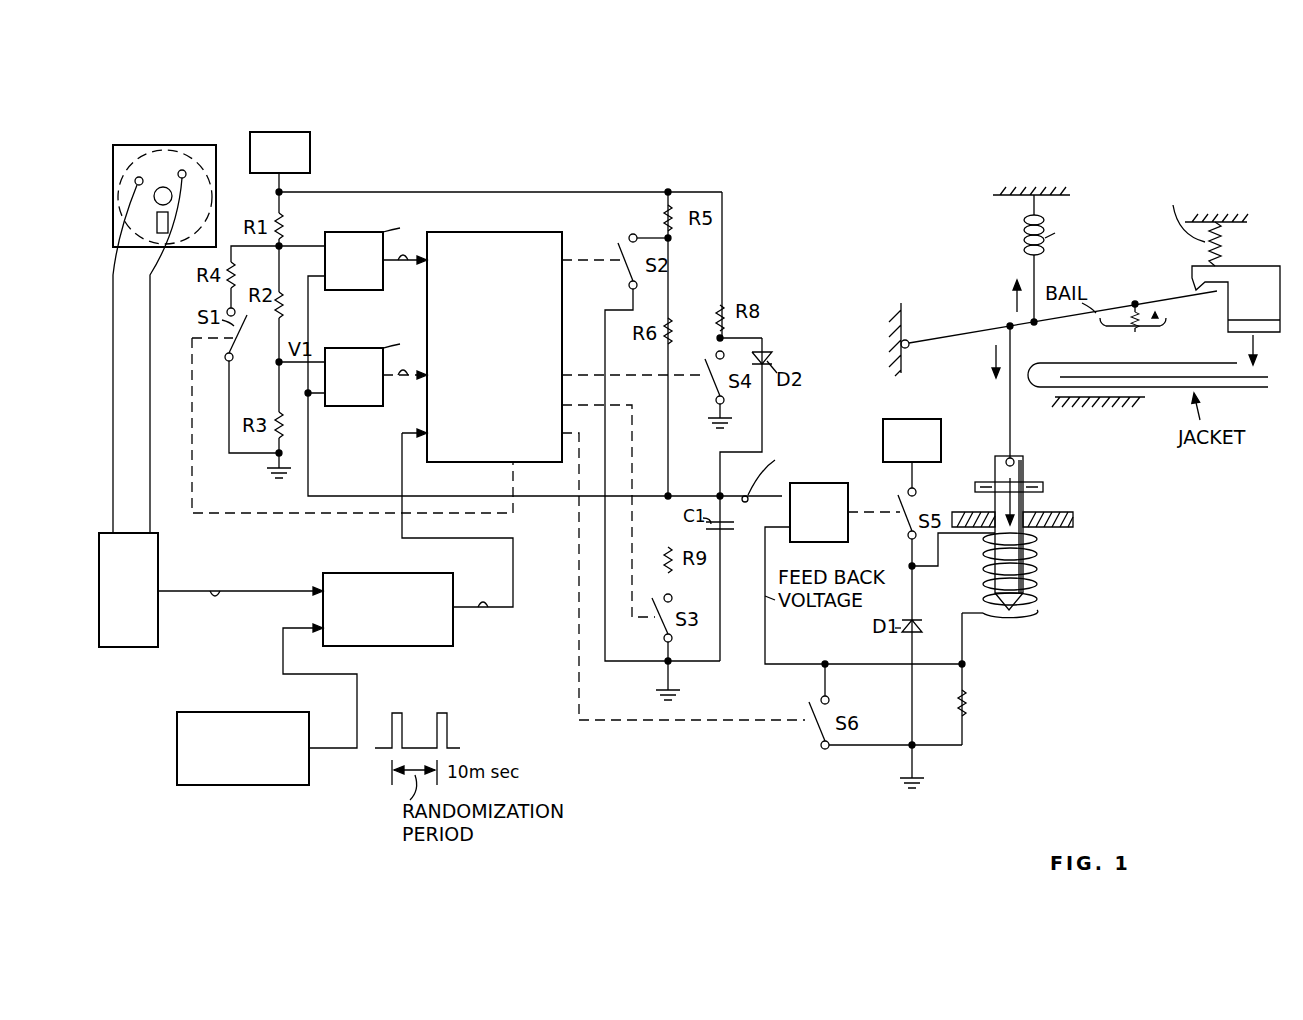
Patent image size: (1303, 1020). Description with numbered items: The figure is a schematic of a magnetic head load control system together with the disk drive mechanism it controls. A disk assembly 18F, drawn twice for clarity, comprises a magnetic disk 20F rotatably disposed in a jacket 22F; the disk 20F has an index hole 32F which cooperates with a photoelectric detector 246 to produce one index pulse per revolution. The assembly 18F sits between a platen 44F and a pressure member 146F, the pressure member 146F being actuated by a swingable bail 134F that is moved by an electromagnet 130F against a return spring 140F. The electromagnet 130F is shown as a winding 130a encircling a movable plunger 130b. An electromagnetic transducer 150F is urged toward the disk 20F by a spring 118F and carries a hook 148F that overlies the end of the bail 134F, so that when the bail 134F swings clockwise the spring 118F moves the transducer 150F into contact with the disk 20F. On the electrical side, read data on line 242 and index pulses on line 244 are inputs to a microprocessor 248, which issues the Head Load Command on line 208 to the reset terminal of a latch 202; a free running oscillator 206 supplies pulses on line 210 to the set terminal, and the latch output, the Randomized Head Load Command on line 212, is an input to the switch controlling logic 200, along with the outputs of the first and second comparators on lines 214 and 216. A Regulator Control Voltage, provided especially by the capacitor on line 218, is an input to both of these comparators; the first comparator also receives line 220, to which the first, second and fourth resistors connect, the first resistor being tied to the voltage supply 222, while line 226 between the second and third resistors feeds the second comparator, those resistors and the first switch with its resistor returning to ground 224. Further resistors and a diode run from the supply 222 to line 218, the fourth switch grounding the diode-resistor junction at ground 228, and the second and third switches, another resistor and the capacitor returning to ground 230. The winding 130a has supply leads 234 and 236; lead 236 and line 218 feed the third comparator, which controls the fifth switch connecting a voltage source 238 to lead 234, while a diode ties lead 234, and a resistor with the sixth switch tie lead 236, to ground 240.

The disk assembly 18F is at (188, 152).
The magnetic disk 20F is at (203, 190).
The jacket 22F is at (145, 150).
The photoelectric detector 246 is at (175, 156).
The index hole 32F is at (145, 245).
The read data line 242 is at (109, 425).
The index pulse line 244 is at (146, 328).
The microprocessor 248 is at (146, 645).
The Head Load Command line 208 is at (292, 595).
The latch 202 is at (394, 573).
The oscillator output line 210 is at (353, 692).
The oscillator 206 is at (262, 712).
The voltage supply 222 is at (310, 142).
The comparator CMP1 input line 220 is at (324, 250).
The ground 224 is at (272, 471).
The comparator CMP1 output line 214 is at (381, 249).
The comparator CMP2 input line 226 is at (325, 348).
The comparator CMP2 output line 216 is at (381, 365).
The switch controlling logic 200 is at (503, 232).
The Randomized Head Load Command line 212 is at (400, 460).
The ground 228 is at (719, 426).
The ground 230 is at (678, 692).
The Regulator Control Voltage line 218 is at (785, 497).
The ground 240 is at (916, 782).
The supply lead 236 is at (966, 639).
The voltage source 238 is at (920, 423).
The supply lead 234 is at (938, 545).
The electromagnet 130F is at (1050, 537).
The plunger 130b is at (1025, 503).
The winding 130a is at (1033, 594).
The bail 134F is at (920, 342).
The return spring 140F is at (1020, 235).
The pressure member 146F is at (1123, 334).
The hook 148F is at (1195, 293).
The transducer 150F is at (1228, 330).
The spring 118F is at (1256, 250).
The platen 44F is at (1095, 416).